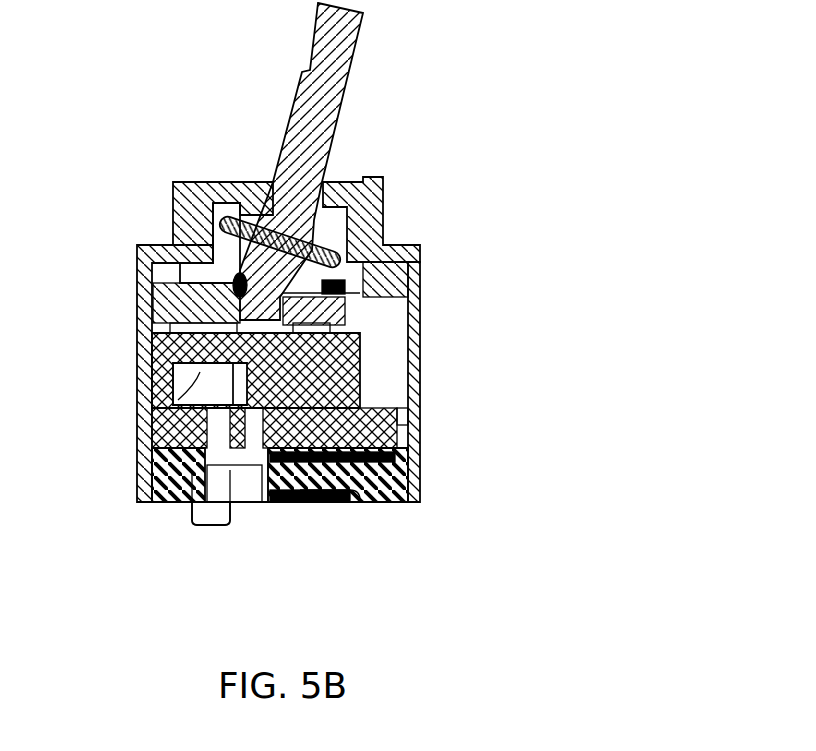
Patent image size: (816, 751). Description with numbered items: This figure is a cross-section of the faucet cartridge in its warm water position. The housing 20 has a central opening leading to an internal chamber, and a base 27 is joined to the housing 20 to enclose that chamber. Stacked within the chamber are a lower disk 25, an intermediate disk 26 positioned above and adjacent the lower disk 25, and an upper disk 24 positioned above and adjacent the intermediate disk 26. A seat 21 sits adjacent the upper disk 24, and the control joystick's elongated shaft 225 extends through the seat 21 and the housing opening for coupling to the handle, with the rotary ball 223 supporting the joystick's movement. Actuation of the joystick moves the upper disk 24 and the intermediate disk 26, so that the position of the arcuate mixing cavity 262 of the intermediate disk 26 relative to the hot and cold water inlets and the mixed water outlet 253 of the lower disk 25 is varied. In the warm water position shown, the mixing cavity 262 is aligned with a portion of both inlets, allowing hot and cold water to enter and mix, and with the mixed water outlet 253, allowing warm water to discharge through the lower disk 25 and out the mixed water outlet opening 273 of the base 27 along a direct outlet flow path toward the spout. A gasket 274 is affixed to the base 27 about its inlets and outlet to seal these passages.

The housing 20 is at (370, 220).
The seat 21 is at (210, 198).
The rotary ball 223 is at (277, 208).
The elongated shaft 225 is at (318, 86).
The upper disk 24 is at (195, 265).
The lower disk 25 is at (402, 432).
The intermediate disk 26 is at (323, 373).
The mixing cavity 262 is at (193, 373).
The base 27 is at (359, 507).
The mixed water outlet 253 is at (243, 490).
The mixed water outlet opening 273 is at (211, 513).
The gasket 274 is at (317, 505).